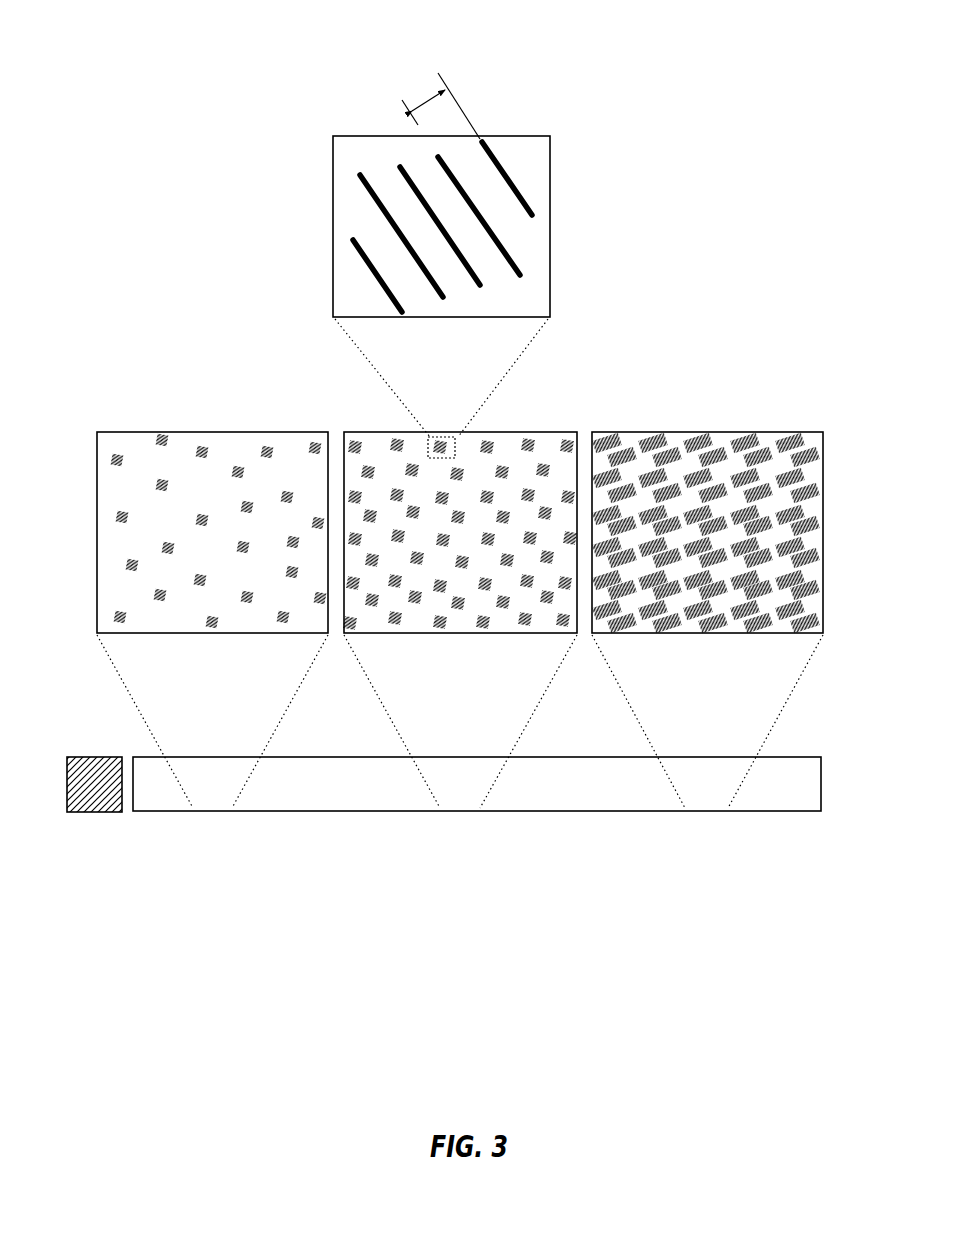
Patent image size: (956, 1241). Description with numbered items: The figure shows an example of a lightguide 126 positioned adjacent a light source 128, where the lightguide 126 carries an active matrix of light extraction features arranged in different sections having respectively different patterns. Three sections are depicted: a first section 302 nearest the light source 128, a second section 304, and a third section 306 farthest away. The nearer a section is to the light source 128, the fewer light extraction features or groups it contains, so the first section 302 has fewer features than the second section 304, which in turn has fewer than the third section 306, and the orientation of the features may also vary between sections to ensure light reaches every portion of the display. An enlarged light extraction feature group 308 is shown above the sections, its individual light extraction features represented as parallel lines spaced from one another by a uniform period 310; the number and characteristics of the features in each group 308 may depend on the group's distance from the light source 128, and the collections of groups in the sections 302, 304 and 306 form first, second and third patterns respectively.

The lightguide 126 is at (477, 804).
The light source 128 is at (96, 809).
The first section 302 is at (217, 428).
The second section 304 is at (519, 428).
The third section 306 is at (712, 428).
The light extraction feature group 308 is at (530, 164).
The period 310 is at (406, 75).